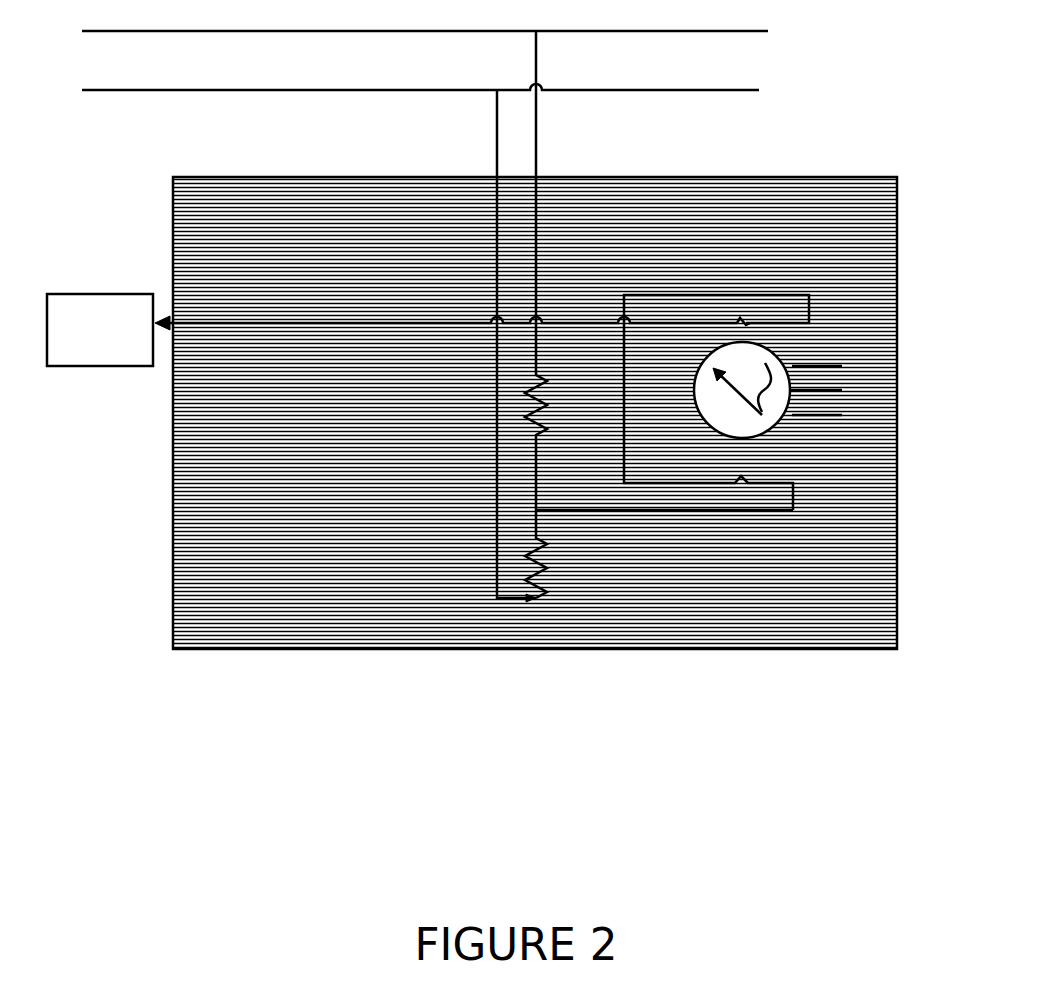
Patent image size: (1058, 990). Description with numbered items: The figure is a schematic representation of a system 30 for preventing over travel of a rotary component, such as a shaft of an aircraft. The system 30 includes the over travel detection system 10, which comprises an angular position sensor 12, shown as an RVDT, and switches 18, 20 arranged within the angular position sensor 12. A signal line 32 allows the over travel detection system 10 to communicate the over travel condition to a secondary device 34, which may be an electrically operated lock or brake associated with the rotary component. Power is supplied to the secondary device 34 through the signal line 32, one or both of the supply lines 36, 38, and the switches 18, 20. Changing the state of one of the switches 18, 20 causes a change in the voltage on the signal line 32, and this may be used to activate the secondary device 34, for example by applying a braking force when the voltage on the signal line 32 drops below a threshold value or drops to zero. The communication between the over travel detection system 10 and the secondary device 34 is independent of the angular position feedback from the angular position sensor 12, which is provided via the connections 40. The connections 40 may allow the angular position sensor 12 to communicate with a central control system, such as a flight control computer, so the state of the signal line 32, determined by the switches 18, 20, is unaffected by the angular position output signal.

The over travel detection system 10 is at (768, 313).
The angular position sensor 12 is at (780, 430).
The switch 18 is at (738, 318).
The switch 20 is at (744, 485).
The system for preventing over travel 30 is at (277, 727).
The signal line 32 is at (303, 325).
The secondary device 34 is at (100, 330).
The supply line 36 is at (497, 150).
The supply line 38 is at (539, 150).
The connections 40 is at (868, 399).